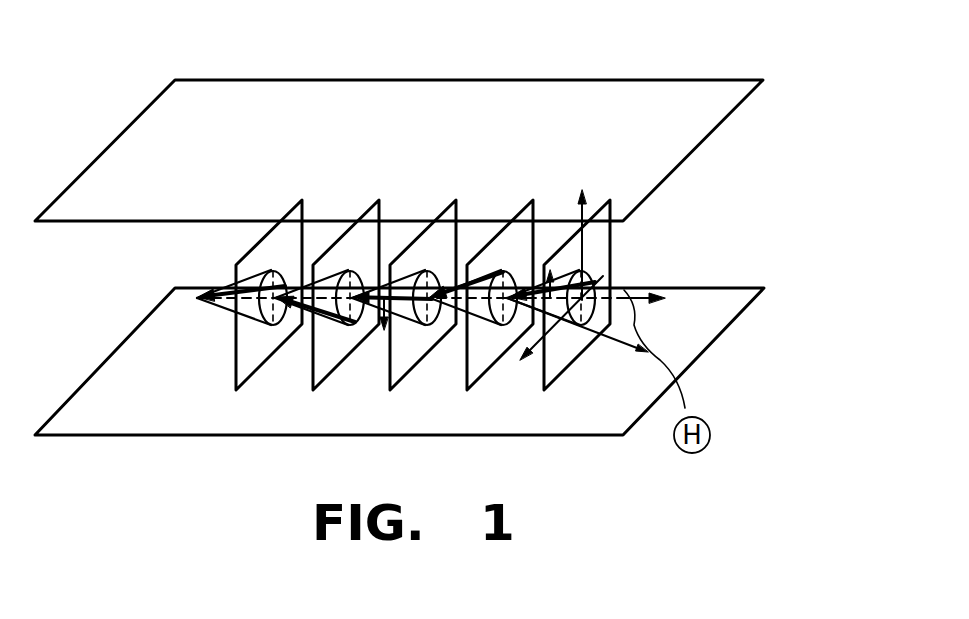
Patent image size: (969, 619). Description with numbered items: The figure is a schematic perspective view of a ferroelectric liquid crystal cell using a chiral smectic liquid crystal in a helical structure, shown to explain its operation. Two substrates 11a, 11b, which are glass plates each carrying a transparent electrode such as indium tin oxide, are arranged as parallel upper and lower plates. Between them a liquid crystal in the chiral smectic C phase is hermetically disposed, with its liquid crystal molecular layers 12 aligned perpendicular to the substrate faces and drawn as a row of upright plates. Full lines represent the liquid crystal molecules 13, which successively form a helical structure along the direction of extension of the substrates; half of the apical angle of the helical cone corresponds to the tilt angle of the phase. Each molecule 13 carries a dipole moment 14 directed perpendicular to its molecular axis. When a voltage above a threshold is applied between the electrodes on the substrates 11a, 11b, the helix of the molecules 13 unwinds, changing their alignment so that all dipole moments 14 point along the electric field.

The substrate 11a is at (685, 88).
The substrate 11b is at (722, 312).
The liquid crystal molecular layers 12 is at (603, 257).
The liquid crystal molecules 13 is at (217, 302).
The dipole moment 14 is at (244, 280).